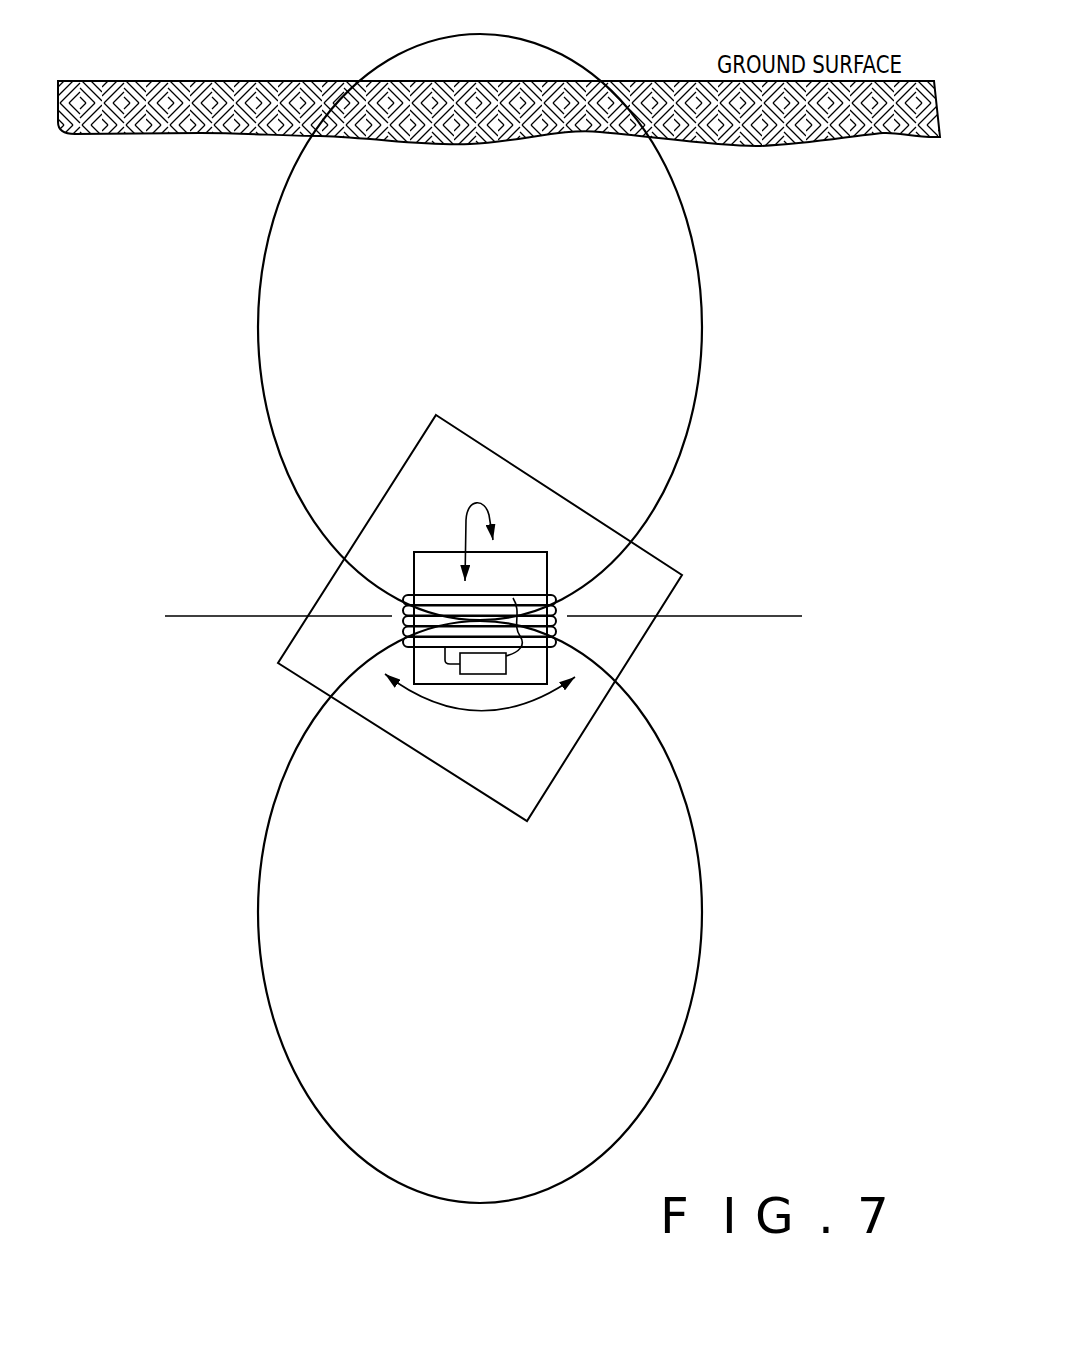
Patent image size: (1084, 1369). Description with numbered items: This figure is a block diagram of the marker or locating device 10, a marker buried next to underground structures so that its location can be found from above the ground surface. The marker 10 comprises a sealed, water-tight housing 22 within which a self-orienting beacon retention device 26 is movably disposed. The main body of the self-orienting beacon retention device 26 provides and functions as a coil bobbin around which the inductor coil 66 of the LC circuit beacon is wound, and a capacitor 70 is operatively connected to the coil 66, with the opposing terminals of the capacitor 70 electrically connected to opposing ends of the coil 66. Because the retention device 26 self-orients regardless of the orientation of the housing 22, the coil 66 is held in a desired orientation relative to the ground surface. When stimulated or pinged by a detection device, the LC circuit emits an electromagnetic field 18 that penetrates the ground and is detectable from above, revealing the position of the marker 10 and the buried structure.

The marker or locating device 10 is at (530, 628).
The field 18 is at (703, 340).
The housing 22 is at (650, 552).
The self-orienting beacon retention device 26 is at (469, 692).
The inductor coil 66 is at (556, 603).
The capacitor 70 is at (484, 670).